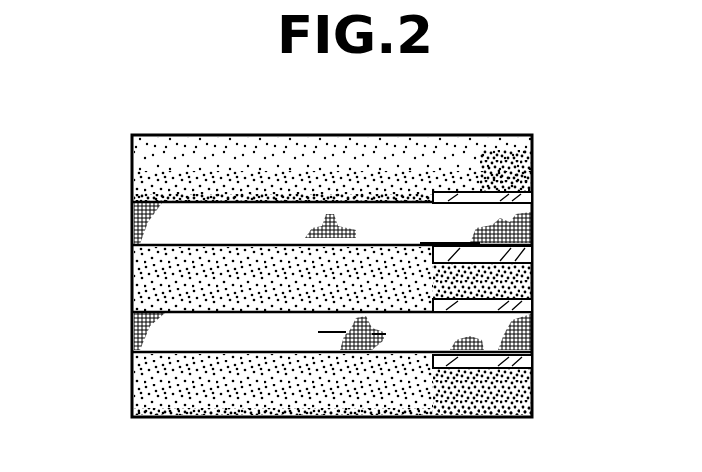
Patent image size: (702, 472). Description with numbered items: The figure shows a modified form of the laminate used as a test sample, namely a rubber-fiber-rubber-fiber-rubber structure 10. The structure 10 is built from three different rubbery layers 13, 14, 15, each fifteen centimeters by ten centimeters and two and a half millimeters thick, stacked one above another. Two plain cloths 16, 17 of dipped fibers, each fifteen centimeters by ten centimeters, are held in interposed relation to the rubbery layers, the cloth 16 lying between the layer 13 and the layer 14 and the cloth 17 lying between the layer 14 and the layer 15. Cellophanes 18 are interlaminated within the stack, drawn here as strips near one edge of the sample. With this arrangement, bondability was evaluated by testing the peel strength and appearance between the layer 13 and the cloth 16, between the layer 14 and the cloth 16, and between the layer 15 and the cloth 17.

The rubber-fiber-rubber-fiber-rubber structure 10 is at (453, 131).
The rubbery layer 13 is at (138, 176).
The rubbery layer 14 is at (138, 284).
The rubbery layer 15 is at (138, 385).
The plain cloth 16 is at (138, 226).
The plain cloth 17 is at (138, 330).
The cellophane 18 is at (532, 196).